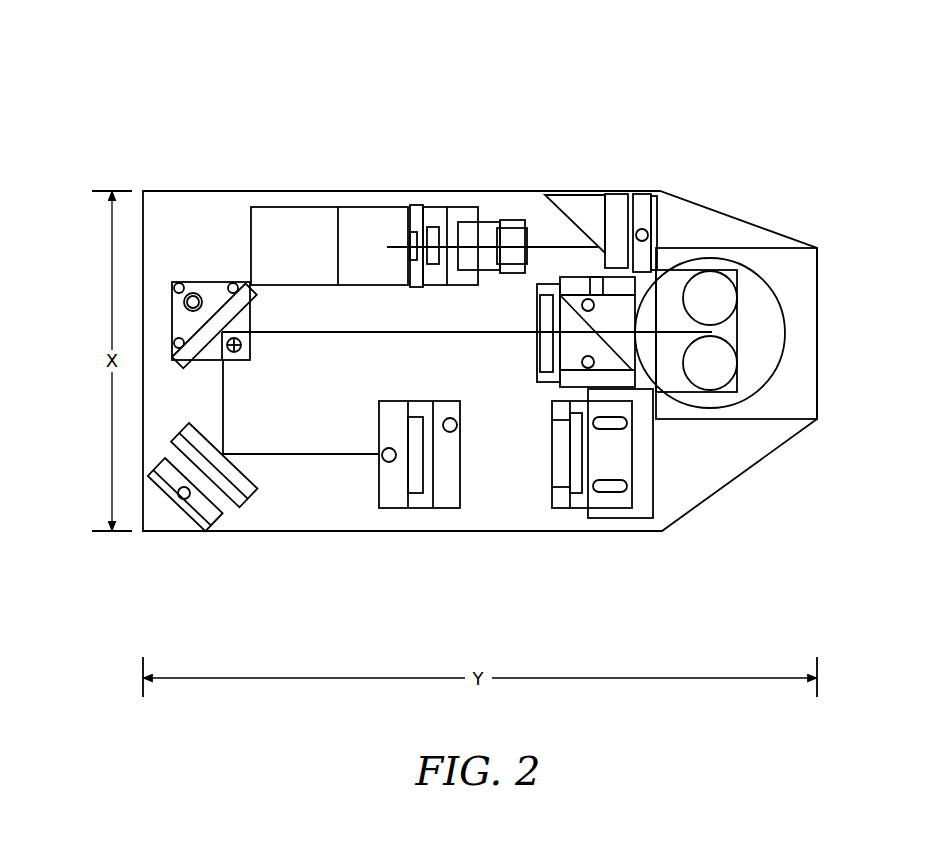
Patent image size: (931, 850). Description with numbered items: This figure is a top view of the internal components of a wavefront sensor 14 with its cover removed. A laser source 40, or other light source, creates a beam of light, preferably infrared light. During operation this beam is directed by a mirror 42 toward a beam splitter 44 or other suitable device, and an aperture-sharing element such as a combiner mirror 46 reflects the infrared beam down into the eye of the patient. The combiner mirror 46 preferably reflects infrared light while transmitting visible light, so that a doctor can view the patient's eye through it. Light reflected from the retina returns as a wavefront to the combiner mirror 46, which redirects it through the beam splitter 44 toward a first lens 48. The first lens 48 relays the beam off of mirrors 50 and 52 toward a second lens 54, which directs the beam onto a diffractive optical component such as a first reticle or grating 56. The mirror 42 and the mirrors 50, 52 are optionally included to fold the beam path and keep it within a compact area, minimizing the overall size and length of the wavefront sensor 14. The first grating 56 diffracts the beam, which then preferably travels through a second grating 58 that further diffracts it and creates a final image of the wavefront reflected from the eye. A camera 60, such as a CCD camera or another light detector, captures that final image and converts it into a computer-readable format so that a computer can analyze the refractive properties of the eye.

The wavefront sensor 14 is at (145, 75).
The laser source 40 is at (467, 203).
The mirror 42 is at (565, 210).
The beam splitter 44 is at (613, 317).
The combiner mirror 46 is at (720, 330).
The first lens 48 is at (533, 363).
The mirror 50 is at (211, 360).
The mirror 52 is at (250, 465).
The second lens 54 is at (407, 477).
The first grating 56 is at (550, 452).
The second grating 58 is at (577, 500).
The camera 60 is at (655, 473).